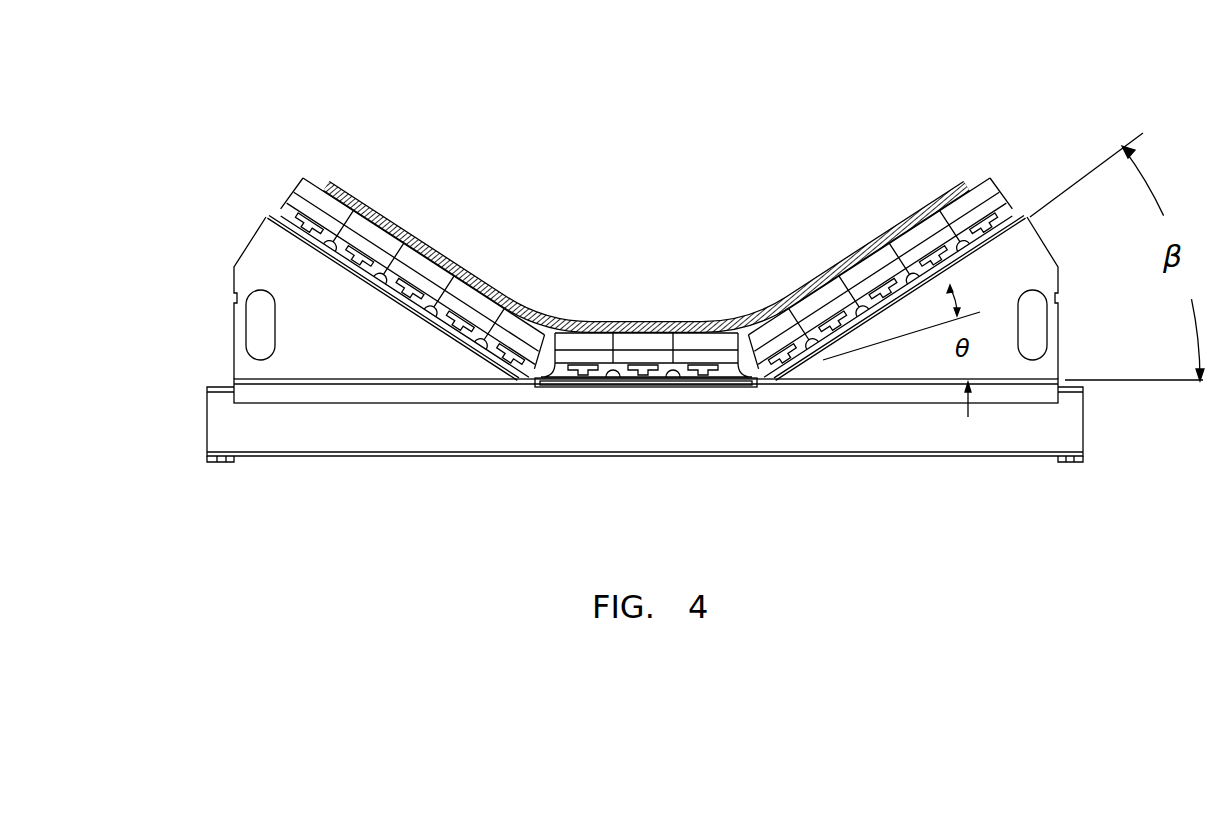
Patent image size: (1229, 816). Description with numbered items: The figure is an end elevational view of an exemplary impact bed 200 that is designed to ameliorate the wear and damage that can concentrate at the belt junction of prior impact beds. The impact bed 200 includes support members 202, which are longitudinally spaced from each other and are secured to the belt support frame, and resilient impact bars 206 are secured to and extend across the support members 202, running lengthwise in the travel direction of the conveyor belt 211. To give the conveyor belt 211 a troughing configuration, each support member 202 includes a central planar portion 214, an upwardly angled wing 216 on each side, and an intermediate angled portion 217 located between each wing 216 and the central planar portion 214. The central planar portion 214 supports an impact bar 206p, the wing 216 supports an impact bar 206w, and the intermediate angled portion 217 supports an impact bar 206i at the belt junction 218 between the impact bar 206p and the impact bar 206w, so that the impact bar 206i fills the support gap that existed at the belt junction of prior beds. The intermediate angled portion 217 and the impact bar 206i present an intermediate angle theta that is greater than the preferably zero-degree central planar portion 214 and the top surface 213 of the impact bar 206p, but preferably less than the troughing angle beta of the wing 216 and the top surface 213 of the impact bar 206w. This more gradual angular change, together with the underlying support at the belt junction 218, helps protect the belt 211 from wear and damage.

The impact bed 200 is at (780, 108).
The support member 202 is at (222, 428).
The resilient impact bar 206 is at (302, 188).
The impact bar 206w is at (403, 260).
The impact bar 206p is at (572, 338).
The impact bar 206i is at (517, 330).
The conveyor belt 211 is at (377, 215).
The top surface 213 is at (683, 333).
The central planar portion 214 is at (602, 395).
The wing 216 is at (273, 248).
The intermediate angled portion 217 is at (800, 368).
The belt junction 218 is at (497, 313).